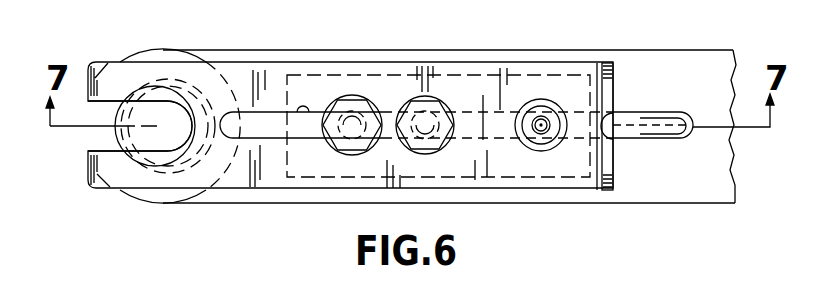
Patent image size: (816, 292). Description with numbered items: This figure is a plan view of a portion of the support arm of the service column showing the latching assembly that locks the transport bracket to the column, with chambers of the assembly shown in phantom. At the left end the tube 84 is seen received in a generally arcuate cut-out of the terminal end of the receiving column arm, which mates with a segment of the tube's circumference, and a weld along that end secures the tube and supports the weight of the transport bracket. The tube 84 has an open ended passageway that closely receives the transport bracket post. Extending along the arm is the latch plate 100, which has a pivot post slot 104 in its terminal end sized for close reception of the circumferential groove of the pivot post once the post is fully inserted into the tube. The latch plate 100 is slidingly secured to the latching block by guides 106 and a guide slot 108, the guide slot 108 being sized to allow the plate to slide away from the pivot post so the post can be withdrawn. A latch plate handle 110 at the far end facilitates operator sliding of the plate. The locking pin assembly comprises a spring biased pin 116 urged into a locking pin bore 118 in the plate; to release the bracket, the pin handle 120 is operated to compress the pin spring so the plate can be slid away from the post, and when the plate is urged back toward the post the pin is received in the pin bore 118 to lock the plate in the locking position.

The tube 84 is at (155, 52).
The latch plate 100 is at (245, 70).
The pivot post slot 104 is at (100, 150).
The guides 106 is at (363, 95).
The guide slot 108 is at (307, 112).
The latch plate handle 110 is at (608, 178).
The spring biased pin 116 is at (542, 110).
The locking pin bore 118 is at (553, 144).
The pin handle 120 is at (633, 117).